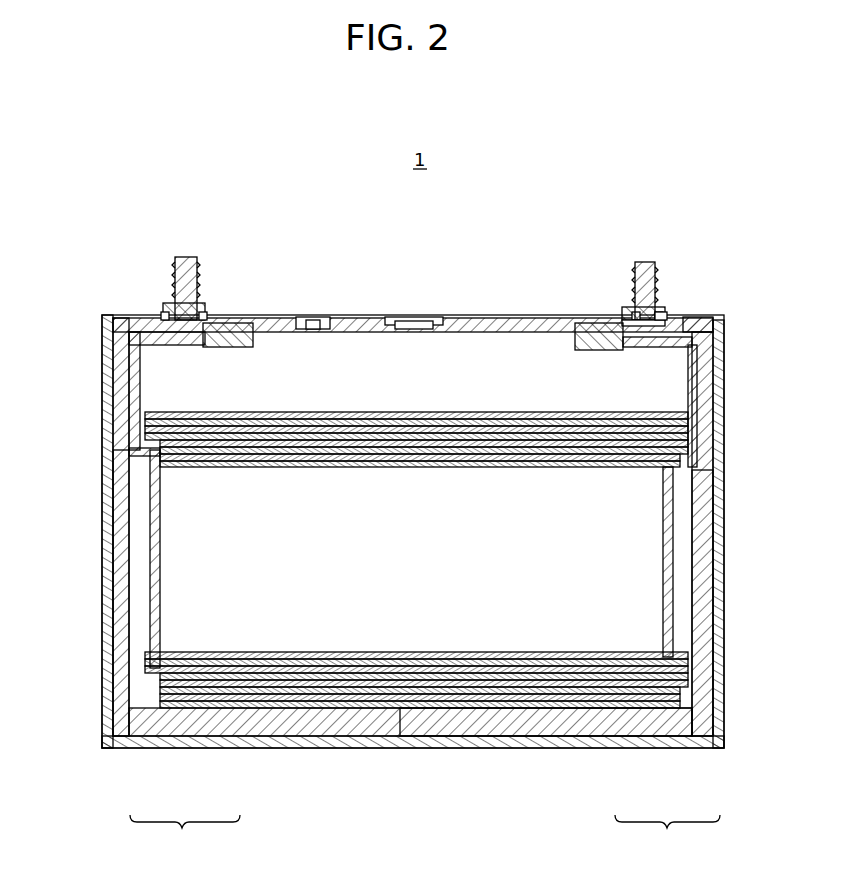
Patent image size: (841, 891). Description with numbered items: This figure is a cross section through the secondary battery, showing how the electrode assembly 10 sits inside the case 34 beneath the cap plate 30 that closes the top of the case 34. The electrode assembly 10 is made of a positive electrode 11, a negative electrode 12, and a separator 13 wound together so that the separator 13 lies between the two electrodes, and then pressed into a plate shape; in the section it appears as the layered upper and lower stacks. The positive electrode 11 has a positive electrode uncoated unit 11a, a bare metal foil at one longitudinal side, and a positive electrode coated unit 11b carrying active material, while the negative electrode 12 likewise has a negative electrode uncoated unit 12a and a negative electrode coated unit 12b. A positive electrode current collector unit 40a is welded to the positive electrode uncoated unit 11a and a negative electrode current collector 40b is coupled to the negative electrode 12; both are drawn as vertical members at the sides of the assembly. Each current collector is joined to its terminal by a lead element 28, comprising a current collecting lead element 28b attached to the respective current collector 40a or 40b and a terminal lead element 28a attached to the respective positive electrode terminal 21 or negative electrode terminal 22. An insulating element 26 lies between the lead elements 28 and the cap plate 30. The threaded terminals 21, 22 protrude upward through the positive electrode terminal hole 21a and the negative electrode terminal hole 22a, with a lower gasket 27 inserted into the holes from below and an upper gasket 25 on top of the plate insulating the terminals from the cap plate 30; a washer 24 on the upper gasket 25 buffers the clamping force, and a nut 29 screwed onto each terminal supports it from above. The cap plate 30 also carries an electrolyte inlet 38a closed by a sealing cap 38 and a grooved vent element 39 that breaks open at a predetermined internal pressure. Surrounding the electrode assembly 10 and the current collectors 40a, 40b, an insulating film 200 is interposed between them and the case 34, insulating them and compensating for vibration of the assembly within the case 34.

The electrode assembly 10 is at (416, 611).
The positive electrode 11 is at (185, 833).
The positive electrode uncoated unit 11a is at (135, 745).
The positive electrode coated unit 11b is at (208, 745).
The negative electrode 12 is at (667, 833).
The negative electrode uncoated unit 12a is at (690, 745).
The negative electrode coated unit 12b is at (628, 700).
The separator 13 is at (318, 690).
The positive electrode terminal 21 is at (185, 257).
The positive electrode terminal hole 21a is at (200, 318).
The negative electrode terminal 22 is at (647, 262).
The negative electrode terminal hole 22a is at (632, 318).
The washer 24 is at (622, 315).
The upper gasket 25 is at (670, 318).
The insulating element 26 is at (242, 330).
The lower gasket 27 is at (625, 332).
The lead element 28 is at (118, 385).
The terminal lead element 28a is at (178, 345).
The current collecting lead element 28b is at (125, 408).
The nut 29 is at (168, 318).
The cap plate 30 is at (478, 330).
The case 34 is at (724, 520).
The sealing cap 38 is at (304, 318).
The electrolyte inlet 38a is at (318, 318).
The vent element 39 is at (412, 318).
The positive electrode current collector unit 40a is at (125, 598).
The negative electrode current collector 40b is at (705, 603).
The insulating film 200 is at (724, 558).